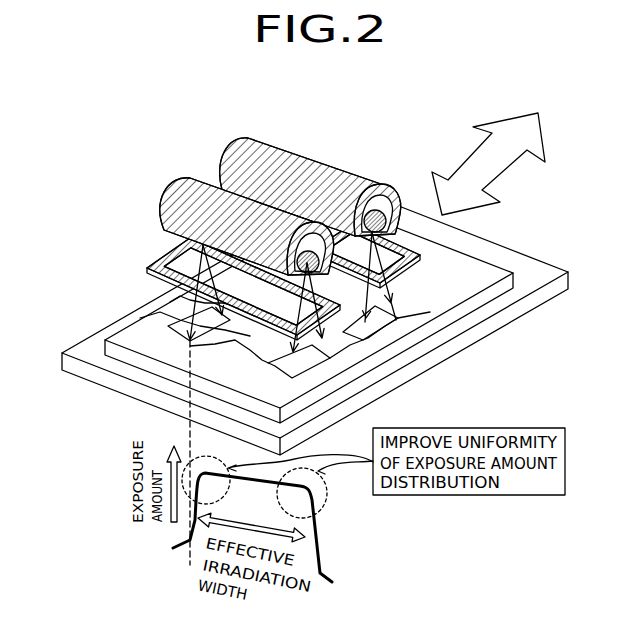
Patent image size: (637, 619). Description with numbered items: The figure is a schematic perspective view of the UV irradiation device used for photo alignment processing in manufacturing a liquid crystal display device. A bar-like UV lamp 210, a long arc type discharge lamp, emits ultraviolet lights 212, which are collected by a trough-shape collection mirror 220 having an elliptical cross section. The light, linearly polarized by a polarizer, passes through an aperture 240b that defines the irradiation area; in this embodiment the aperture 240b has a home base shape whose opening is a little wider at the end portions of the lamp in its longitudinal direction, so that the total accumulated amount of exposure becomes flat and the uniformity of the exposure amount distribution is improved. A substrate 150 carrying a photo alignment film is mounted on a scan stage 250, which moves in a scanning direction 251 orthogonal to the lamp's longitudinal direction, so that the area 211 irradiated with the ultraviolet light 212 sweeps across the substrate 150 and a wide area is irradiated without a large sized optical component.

The substrate 150 is at (430, 312).
The bar-like UV lamp 210 is at (383, 206).
The area irradiated with ultraviolet light 211 is at (190, 346).
The ultraviolet light 212 is at (170, 302).
The trough-shape collection mirror 220 is at (242, 143).
The aperture 240b is at (152, 258).
The scan stage 250 is at (550, 274).
The scanning direction 251 is at (517, 162).